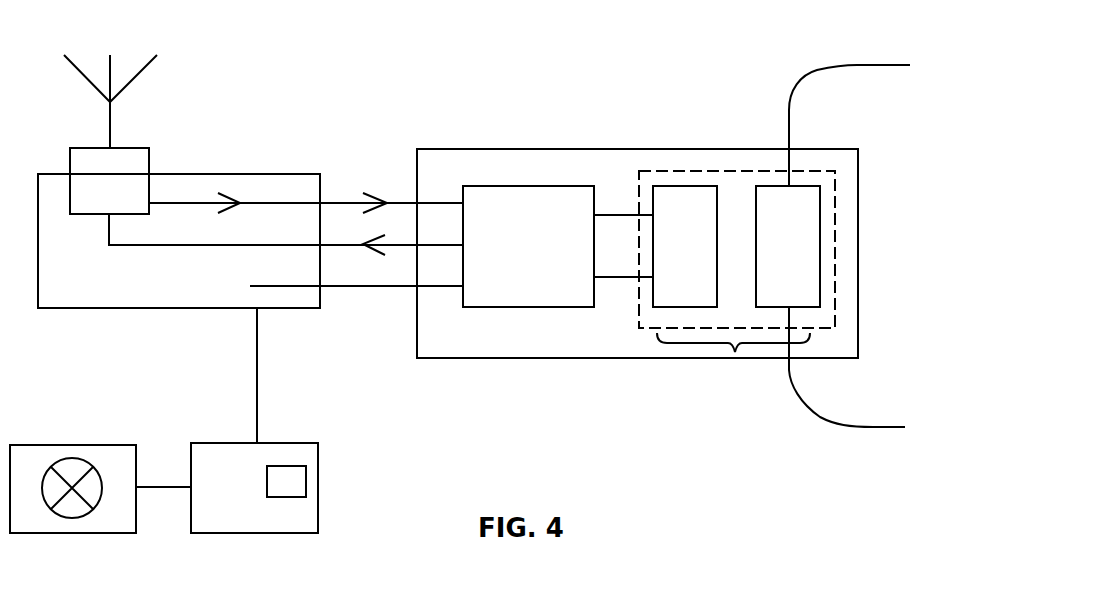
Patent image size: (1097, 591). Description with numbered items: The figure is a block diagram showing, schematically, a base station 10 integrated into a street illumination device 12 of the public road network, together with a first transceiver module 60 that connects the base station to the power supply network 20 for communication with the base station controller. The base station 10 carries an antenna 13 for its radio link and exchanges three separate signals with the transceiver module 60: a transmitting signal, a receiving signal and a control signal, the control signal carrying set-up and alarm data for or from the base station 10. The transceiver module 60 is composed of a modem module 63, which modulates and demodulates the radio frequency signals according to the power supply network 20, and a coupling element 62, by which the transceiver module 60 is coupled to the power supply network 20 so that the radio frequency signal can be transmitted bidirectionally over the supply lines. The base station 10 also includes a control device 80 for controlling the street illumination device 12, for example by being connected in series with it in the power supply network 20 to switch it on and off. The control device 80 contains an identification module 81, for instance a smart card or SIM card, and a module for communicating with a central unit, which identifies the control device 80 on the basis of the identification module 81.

The base station 10 is at (80, 283).
The street illumination device 12 is at (72, 518).
The antenna 13 is at (117, 103).
The power supply network 20 is at (878, 63).
The first transceiver module 60 is at (607, 160).
The coupling element 62 is at (735, 352).
The modem module 63 is at (533, 292).
The control device 80 is at (310, 450).
The identification module 81 is at (297, 483).